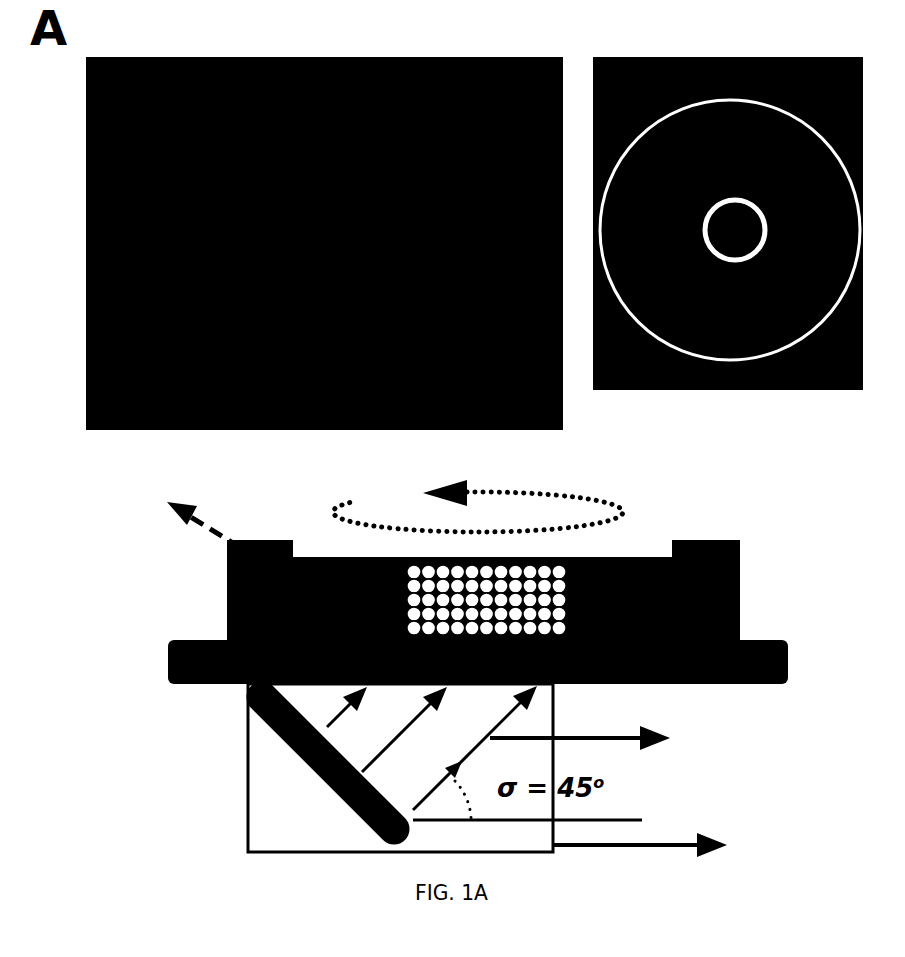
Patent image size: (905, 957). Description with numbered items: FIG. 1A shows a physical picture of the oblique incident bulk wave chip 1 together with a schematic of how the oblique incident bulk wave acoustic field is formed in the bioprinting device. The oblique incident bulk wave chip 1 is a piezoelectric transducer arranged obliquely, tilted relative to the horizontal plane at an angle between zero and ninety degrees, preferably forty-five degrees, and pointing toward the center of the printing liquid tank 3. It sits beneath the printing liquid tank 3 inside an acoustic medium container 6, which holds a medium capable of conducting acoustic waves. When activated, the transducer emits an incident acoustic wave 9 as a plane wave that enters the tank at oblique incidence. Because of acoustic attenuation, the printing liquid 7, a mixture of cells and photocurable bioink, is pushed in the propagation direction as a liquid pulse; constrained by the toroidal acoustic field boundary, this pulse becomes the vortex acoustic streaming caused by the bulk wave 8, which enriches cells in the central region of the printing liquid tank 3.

The oblique incident bulk wave chip 1 is at (290, 748).
The printing liquid tank 3 is at (714, 522).
The acoustic medium container 6 is at (661, 846).
The printing liquid 7 is at (236, 545).
The vortex acoustic streaming caused by the bulk wave 8 is at (692, 282).
The incident acoustic wave 9 is at (599, 734).